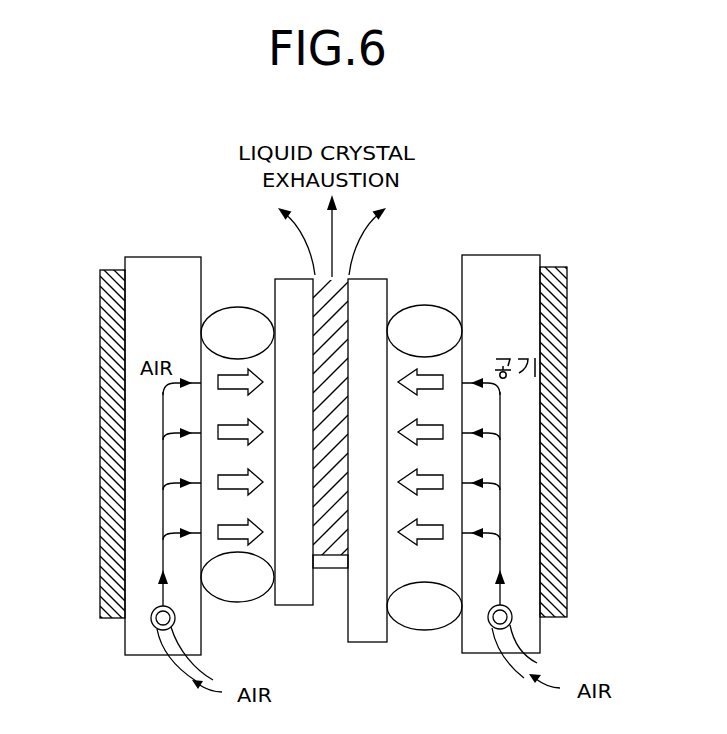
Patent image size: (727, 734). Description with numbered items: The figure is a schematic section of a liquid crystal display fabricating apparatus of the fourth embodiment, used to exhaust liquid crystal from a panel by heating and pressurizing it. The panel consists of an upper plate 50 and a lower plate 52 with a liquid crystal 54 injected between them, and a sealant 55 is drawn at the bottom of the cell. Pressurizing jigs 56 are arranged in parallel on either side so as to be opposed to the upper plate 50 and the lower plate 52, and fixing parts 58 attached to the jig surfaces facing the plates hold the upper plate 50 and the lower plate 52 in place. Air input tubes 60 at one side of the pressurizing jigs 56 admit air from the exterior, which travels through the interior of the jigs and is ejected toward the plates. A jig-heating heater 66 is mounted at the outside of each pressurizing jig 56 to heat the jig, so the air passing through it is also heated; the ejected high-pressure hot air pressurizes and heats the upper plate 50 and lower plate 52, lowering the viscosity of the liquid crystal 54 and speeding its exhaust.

The upper plate 50 is at (292, 288).
The lower plate 52 is at (370, 288).
The liquid crystal 54 is at (317, 349).
The sealant 55 is at (333, 570).
The pressurizing jigs 56 is at (157, 262).
The fixing parts 58 is at (226, 310).
The air input tubes 60 is at (173, 672).
The jig-heating heater 66 is at (100, 441).